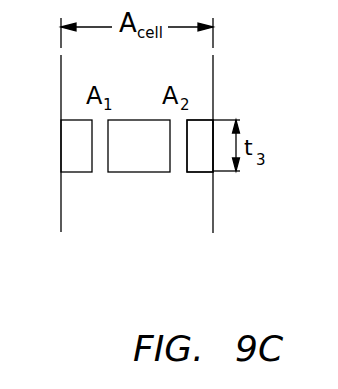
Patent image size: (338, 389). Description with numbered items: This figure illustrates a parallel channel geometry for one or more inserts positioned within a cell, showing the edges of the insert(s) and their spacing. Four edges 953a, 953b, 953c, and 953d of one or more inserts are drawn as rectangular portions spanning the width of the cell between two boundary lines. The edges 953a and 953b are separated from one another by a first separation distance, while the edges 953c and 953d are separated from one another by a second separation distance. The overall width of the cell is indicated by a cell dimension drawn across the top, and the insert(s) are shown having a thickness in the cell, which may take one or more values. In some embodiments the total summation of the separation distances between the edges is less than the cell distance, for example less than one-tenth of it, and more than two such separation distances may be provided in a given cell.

The edge 953a is at (91, 147).
The edge 953b is at (108, 147).
The edge 953c is at (170, 143).
The edge 953d is at (187, 145).